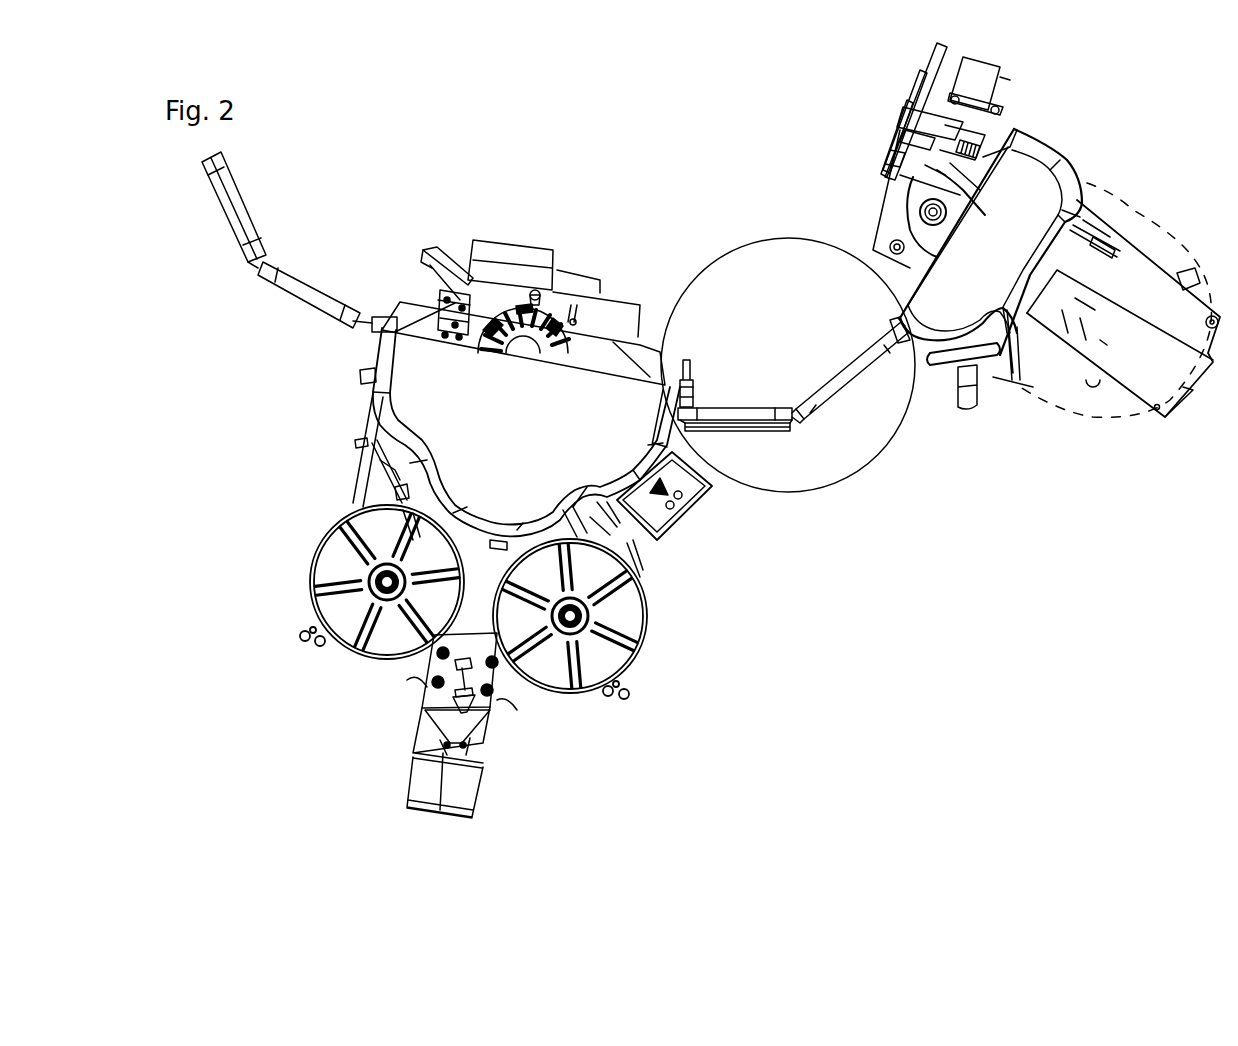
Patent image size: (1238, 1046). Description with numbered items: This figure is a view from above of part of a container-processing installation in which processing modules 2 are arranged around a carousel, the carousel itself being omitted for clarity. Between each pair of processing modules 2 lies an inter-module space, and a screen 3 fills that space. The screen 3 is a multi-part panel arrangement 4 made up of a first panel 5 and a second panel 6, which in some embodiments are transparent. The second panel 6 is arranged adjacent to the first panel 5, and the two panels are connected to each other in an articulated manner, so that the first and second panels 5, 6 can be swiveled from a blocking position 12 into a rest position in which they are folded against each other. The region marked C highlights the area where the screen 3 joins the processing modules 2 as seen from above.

The processing module 2 is at (760, 430).
The screen 3 is at (317, 232).
The multi-part panel arrangement 4 is at (304, 295).
The first panel 5 is at (877, 390).
The second panel 6 is at (771, 443).
The blocking position 12 is at (790, 369).
The detail circle C is at (715, 262).